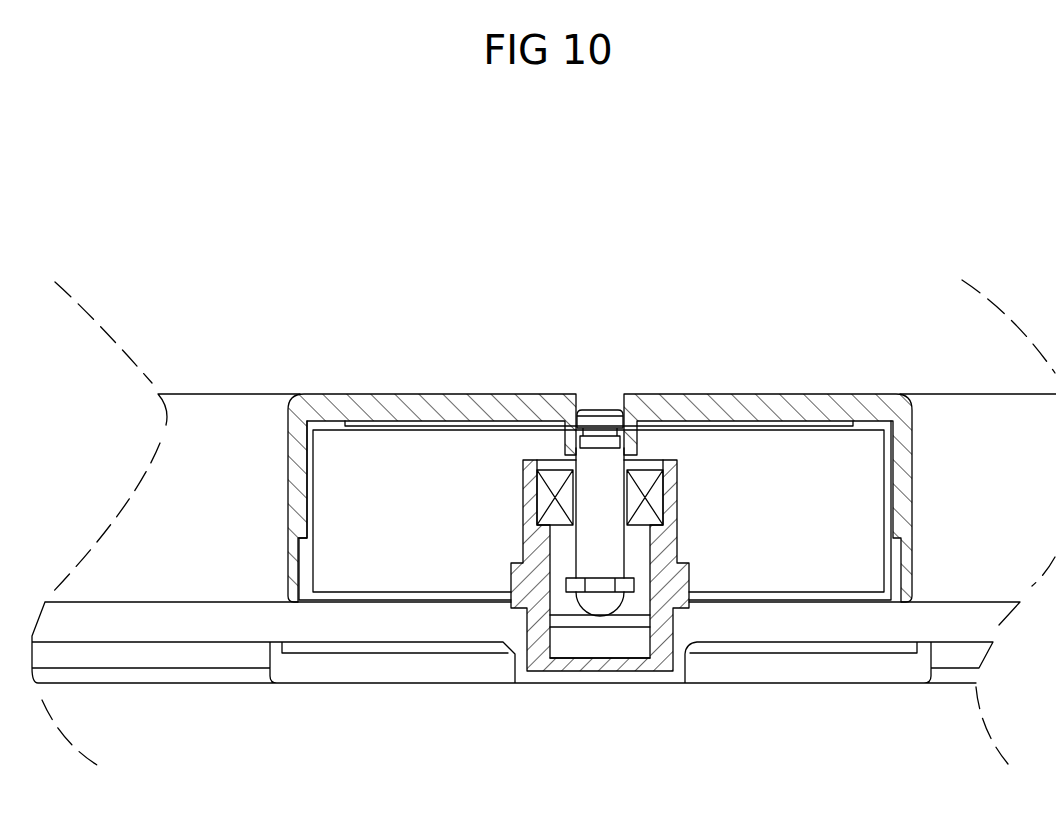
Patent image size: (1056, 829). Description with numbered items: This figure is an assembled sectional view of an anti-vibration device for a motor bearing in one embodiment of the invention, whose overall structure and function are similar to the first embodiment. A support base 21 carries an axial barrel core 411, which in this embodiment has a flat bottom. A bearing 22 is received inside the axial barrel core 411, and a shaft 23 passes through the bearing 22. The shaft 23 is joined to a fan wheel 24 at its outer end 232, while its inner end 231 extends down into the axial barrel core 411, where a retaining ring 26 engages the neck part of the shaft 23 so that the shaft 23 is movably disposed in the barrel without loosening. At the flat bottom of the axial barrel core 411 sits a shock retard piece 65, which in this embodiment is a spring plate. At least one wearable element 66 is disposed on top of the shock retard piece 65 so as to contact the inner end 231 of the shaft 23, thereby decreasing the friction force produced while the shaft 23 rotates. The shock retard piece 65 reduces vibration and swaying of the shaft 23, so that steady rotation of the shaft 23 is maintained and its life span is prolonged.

The support base 21 is at (785, 670).
The bearing 22 is at (657, 495).
The shaft 23 is at (608, 472).
The fan wheel 24 is at (448, 393).
The retaining ring 26 is at (578, 583).
The shock retard piece 65 is at (580, 648).
The wearable element 66 is at (600, 622).
The inner end 231 is at (593, 602).
The outer end 232 is at (602, 418).
The axial barrel core 411 is at (532, 467).